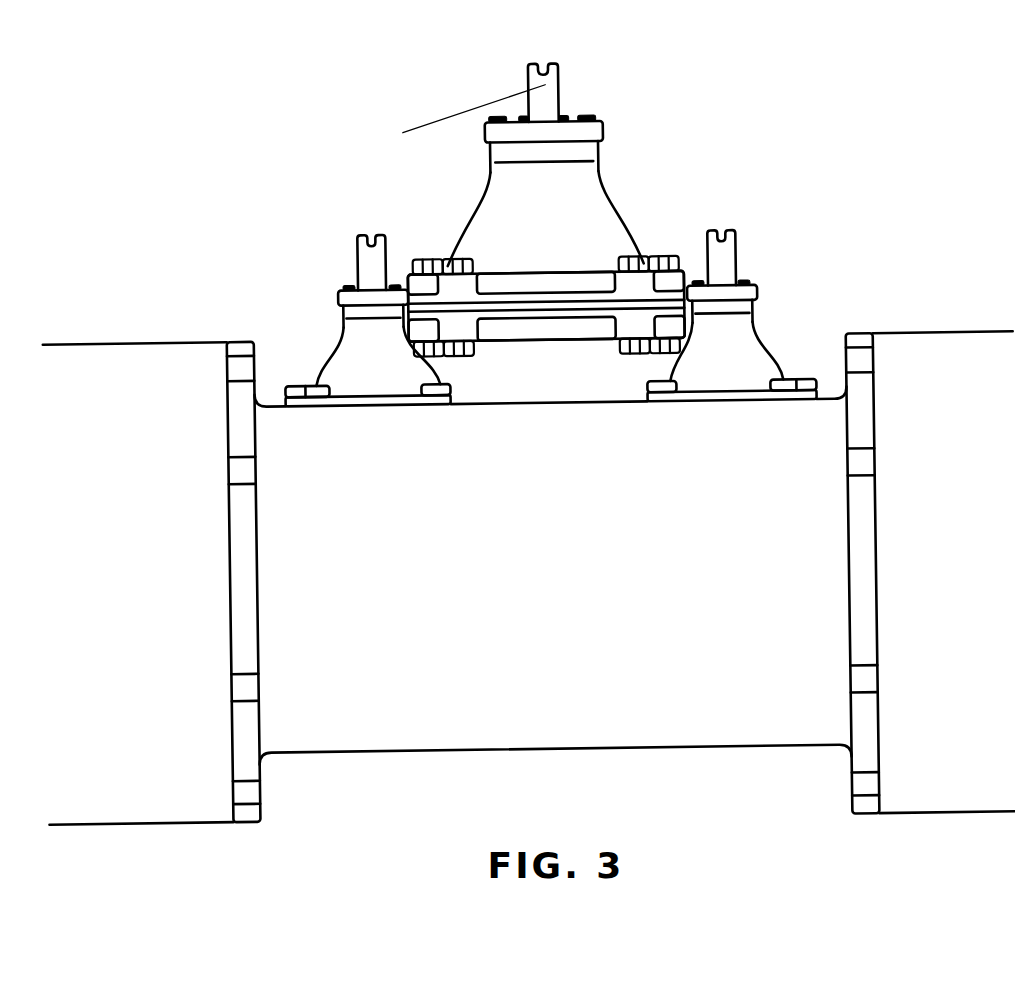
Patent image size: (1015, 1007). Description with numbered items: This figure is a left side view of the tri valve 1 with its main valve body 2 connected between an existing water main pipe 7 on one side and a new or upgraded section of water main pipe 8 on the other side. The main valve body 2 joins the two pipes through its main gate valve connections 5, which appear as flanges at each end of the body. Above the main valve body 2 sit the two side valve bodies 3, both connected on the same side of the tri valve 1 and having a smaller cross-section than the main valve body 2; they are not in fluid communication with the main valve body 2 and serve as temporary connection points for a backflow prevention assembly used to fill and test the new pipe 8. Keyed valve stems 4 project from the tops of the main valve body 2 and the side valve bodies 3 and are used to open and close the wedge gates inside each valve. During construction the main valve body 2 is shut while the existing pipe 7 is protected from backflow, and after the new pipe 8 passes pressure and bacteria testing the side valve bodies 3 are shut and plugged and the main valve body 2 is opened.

The tri valve 1 is at (527, 473).
The main valve body 2 is at (597, 232).
The side valve bodies 3 is at (344, 362).
The keyed valve stems 4 is at (375, 236).
The main gate valve connections 5 is at (238, 607).
The existing water main pipe 7 is at (149, 793).
The new section of water main pipe 8 is at (971, 798).